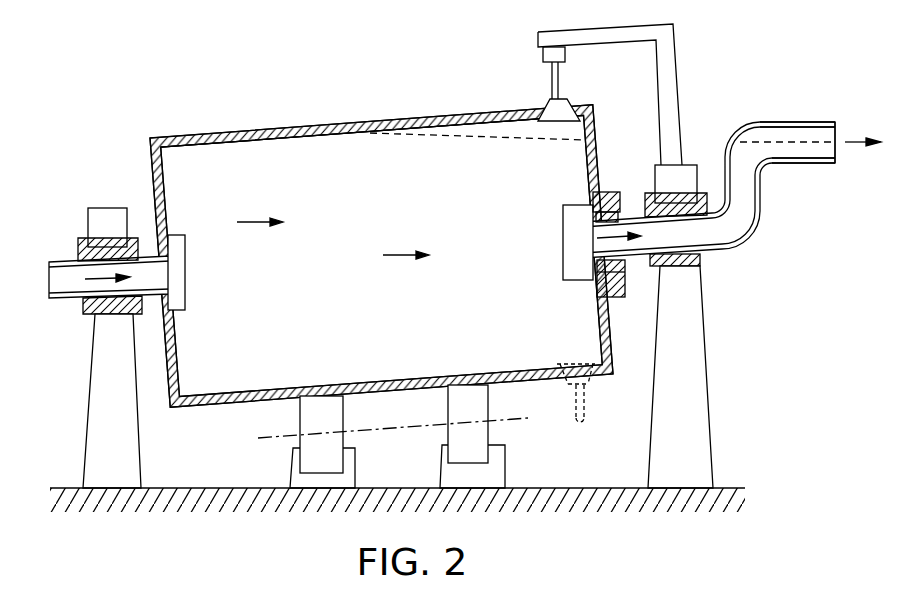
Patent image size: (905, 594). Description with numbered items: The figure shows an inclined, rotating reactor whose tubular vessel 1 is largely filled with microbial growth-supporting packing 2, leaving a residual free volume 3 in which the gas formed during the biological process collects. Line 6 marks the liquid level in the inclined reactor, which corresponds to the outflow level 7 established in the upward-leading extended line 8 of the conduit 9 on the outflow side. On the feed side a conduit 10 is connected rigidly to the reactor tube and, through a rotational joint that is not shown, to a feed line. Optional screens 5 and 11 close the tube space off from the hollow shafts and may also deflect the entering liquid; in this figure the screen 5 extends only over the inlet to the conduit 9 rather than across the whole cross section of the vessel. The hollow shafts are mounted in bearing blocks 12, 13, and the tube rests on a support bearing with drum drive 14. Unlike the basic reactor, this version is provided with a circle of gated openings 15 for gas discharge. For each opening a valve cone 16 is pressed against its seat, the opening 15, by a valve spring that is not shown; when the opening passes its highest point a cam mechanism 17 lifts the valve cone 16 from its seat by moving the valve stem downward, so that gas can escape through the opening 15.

The tubular vessel 1 is at (228, 128).
The microbial growth-supporting packing 2 is at (316, 357).
The residual free volume 3 is at (500, 133).
The screen 5 is at (565, 247).
The liquid level line 6 is at (423, 134).
The outflow level 7 is at (772, 140).
The upward-leading extended line 8 is at (826, 122).
The conduit on the outflow side 9 is at (727, 237).
The feed-side conduit 10 is at (62, 262).
The screen 11 is at (188, 264).
The bearing block 12 is at (98, 418).
The bearing block 13 is at (697, 432).
The support bearing with drum drive 14 is at (442, 473).
The gated opening 15 is at (572, 100).
The valve cone 16 is at (551, 98).
The cam mechanism 17 is at (538, 36).